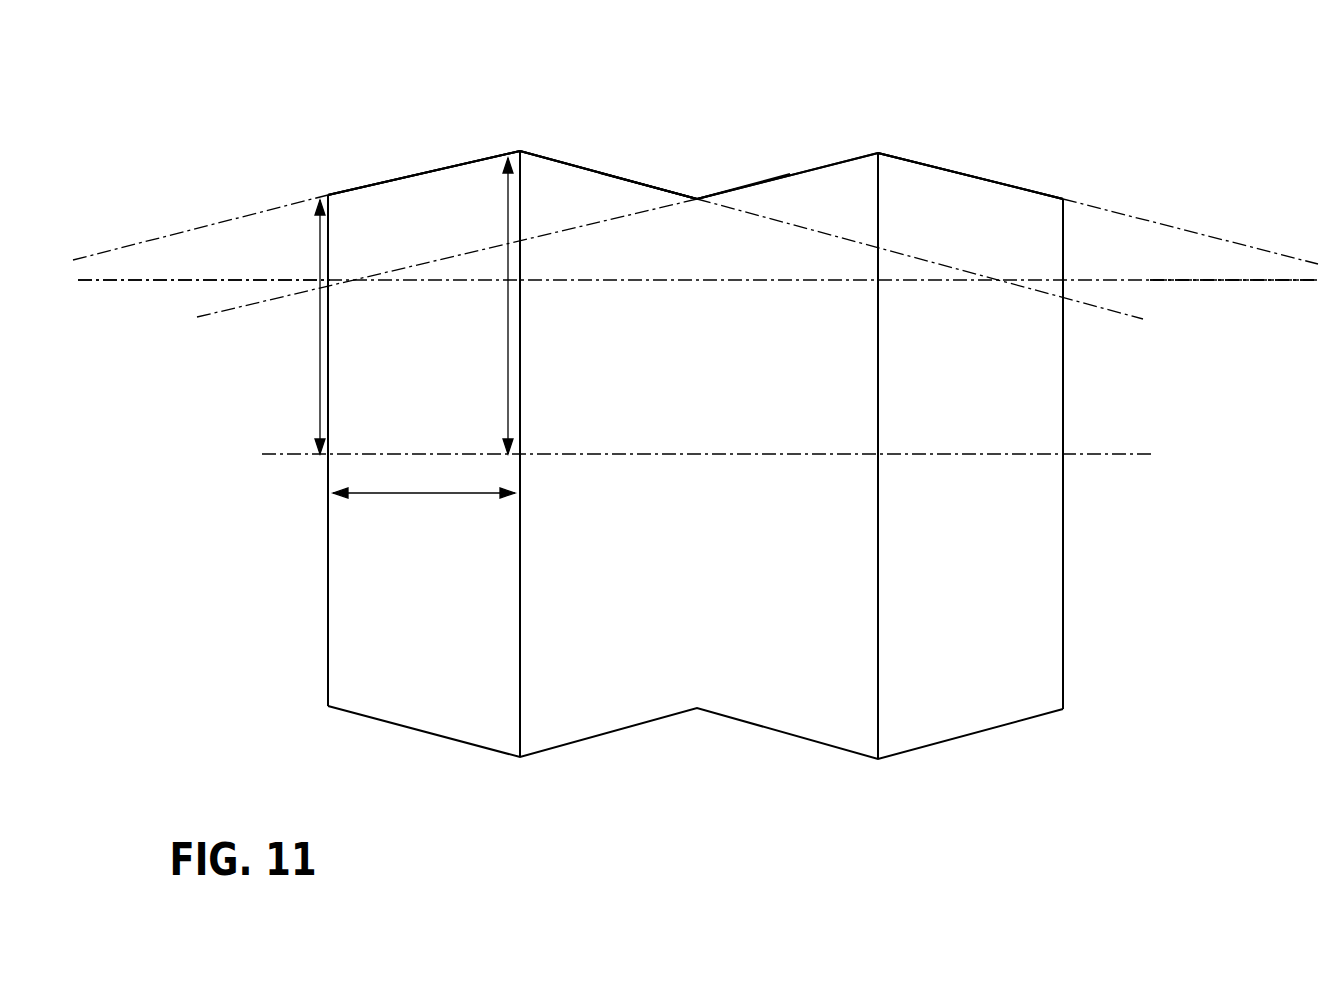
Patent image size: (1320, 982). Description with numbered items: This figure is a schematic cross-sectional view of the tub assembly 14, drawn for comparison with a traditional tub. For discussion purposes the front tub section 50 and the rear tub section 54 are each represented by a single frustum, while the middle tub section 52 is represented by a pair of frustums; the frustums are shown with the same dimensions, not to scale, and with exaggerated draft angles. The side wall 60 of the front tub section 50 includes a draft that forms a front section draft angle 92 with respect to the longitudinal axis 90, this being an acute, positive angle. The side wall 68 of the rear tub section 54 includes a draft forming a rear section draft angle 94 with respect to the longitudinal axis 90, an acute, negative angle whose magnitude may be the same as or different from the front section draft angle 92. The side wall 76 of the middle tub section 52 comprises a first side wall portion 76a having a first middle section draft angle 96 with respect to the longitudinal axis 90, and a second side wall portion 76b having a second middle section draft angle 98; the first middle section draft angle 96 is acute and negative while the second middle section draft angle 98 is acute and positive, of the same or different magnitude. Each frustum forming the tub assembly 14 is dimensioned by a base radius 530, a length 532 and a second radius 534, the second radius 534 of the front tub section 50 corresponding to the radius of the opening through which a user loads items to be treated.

The tub assembly 14 is at (968, 78).
The front tub section 50 is at (347, 168).
The middle tub section 52 is at (705, 150).
The rear tub section 54 is at (988, 155).
The side wall of the front tub section 60 is at (384, 184).
The side wall of the rear tub section 68 is at (1018, 185).
The side wall of the middle tub section 76 is at (661, 185).
The first side wall portion 76a is at (595, 170).
The second side wall portion 76b is at (753, 183).
The longitudinal axis 90 is at (1223, 281).
The front section draft angle 92 is at (95, 255).
The rear section draft angle 94 is at (1268, 253).
The first middle section draft angle 96 is at (927, 261).
The second middle section draft angle 98 is at (414, 265).
The base radius 530 is at (508, 350).
The length 532 is at (462, 493).
The second radius 534 is at (318, 376).